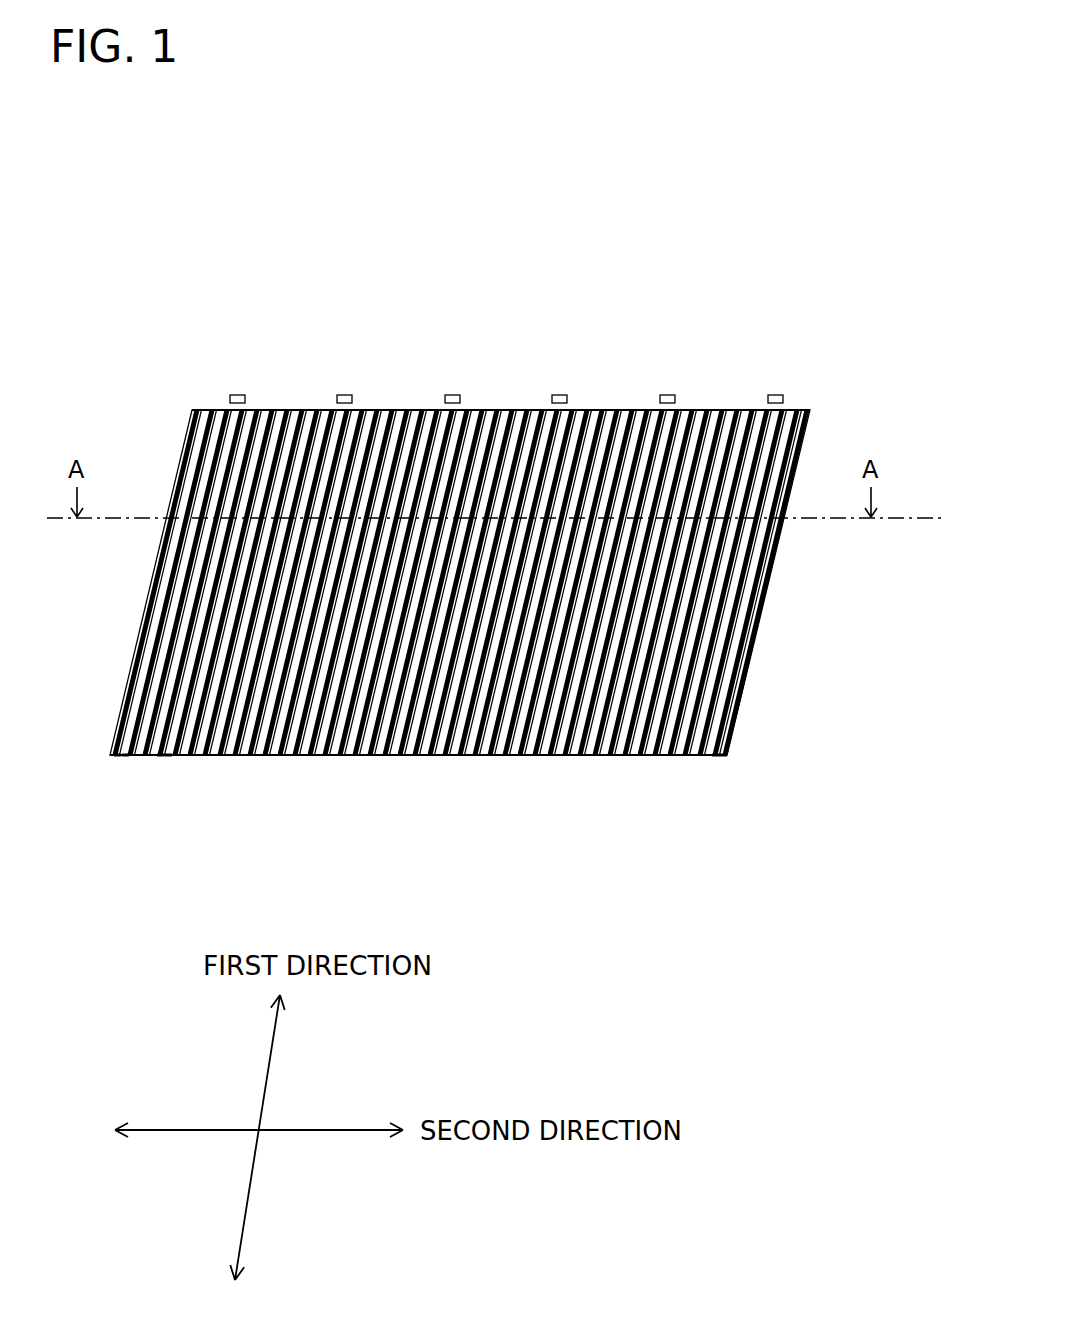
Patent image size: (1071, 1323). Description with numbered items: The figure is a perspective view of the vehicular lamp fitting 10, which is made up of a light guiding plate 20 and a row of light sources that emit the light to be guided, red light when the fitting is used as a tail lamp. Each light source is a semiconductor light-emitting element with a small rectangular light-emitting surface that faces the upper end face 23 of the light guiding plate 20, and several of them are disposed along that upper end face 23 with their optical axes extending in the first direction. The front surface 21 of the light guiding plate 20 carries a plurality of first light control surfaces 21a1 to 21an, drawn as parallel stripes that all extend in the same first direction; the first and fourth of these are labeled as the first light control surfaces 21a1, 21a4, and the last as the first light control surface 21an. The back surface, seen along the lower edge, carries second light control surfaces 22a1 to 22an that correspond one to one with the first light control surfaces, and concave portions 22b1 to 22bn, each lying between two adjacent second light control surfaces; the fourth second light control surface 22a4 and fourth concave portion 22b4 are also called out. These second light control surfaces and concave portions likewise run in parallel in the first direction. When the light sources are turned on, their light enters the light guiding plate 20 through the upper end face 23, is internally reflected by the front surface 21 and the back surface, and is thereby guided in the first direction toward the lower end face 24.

The vehicular lamp fitting 10 is at (471, 186).
The light guiding plate 20 is at (428, 602).
The front surface 21 is at (151, 594).
The first light control surface 21a1 is at (148, 630).
The first light control surface 21a4 is at (172, 692).
The first light control surface 21an is at (730, 672).
The second light control surface 22a1 is at (120, 757).
The concave portion 22b1 is at (125, 757).
The second light control surface 22a4 is at (160, 757).
The concave portion 22b4 is at (164, 760).
The second light control surface 22an is at (727, 758).
The concave portion 22bn is at (720, 760).
The upper end face 23 is at (495, 410).
The lower end face 24 is at (448, 758).